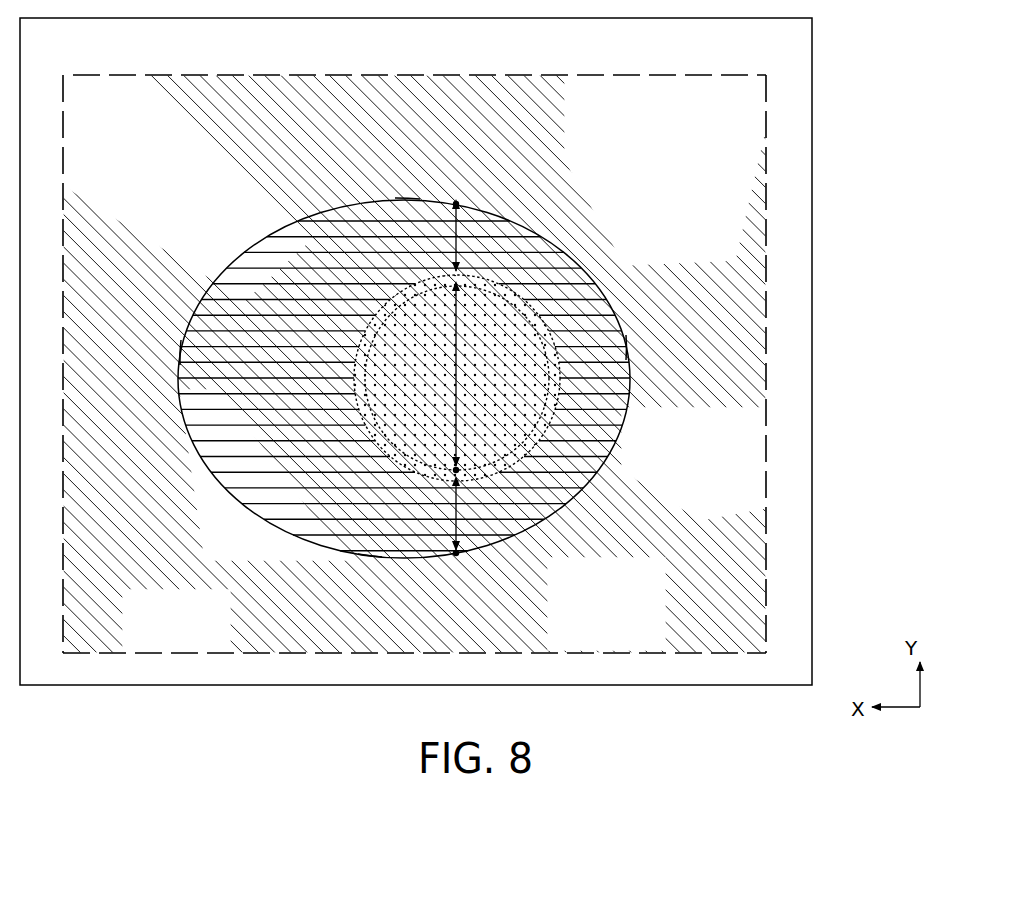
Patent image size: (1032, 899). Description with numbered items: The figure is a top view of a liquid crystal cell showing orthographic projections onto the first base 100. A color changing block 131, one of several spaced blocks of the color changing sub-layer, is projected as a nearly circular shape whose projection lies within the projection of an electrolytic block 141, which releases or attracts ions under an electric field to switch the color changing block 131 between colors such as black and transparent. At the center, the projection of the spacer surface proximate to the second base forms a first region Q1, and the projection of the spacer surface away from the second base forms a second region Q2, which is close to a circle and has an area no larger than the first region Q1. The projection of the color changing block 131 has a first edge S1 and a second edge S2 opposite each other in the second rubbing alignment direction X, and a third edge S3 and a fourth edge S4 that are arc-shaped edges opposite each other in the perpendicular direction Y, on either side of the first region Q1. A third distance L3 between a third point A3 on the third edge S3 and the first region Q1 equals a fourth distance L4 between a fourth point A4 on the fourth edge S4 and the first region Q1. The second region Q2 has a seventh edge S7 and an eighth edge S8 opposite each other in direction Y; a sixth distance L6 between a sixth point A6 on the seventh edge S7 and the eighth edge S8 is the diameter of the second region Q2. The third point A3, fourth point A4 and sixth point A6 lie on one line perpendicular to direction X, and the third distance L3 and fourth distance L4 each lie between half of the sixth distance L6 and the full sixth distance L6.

The first base 100 is at (788, 102).
The electrolytic block 141 is at (718, 182).
The color changing block 131 is at (345, 207).
The first region Q1 is at (543, 330).
The second region Q2 is at (500, 323).
The first edge S1 is at (630, 346).
The second edge S2 is at (176, 350).
The third edge S3 is at (373, 561).
The fourth edge S4 is at (401, 196).
The seventh edge S7 is at (498, 467).
The eighth edge S8 is at (481, 285).
The fourth point A4 is at (467, 192).
The sixth point A6 is at (442, 458).
The third point A3 is at (467, 570).
The fourth distance L4 is at (455, 239).
The sixth distance L6 is at (455, 378).
The third distance L3 is at (455, 517).